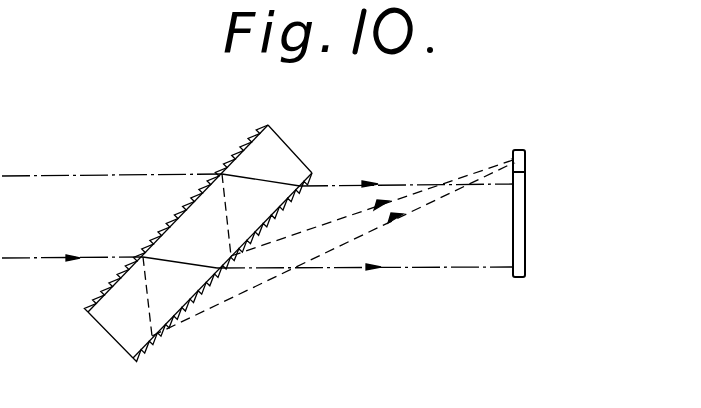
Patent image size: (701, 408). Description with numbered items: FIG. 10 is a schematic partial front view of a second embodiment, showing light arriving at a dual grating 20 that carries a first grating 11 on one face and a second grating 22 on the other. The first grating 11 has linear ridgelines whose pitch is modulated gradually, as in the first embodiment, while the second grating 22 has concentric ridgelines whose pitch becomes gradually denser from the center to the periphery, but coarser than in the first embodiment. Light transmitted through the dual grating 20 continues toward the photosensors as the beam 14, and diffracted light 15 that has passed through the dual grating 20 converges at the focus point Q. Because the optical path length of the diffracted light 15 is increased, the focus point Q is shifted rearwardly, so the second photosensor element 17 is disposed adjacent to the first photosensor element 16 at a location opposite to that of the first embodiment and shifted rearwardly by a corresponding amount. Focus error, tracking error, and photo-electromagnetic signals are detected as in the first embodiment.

The dual grating 20 is at (292, 150).
The first grating 11 is at (105, 290).
The second grating 22 is at (158, 344).
The transmitted beam 14 is at (412, 183).
The diffracted light 15 is at (430, 193).
The first photosensor element 16 is at (520, 227).
The second photosensor element 17 is at (527, 160).
The focus point Q is at (508, 161).